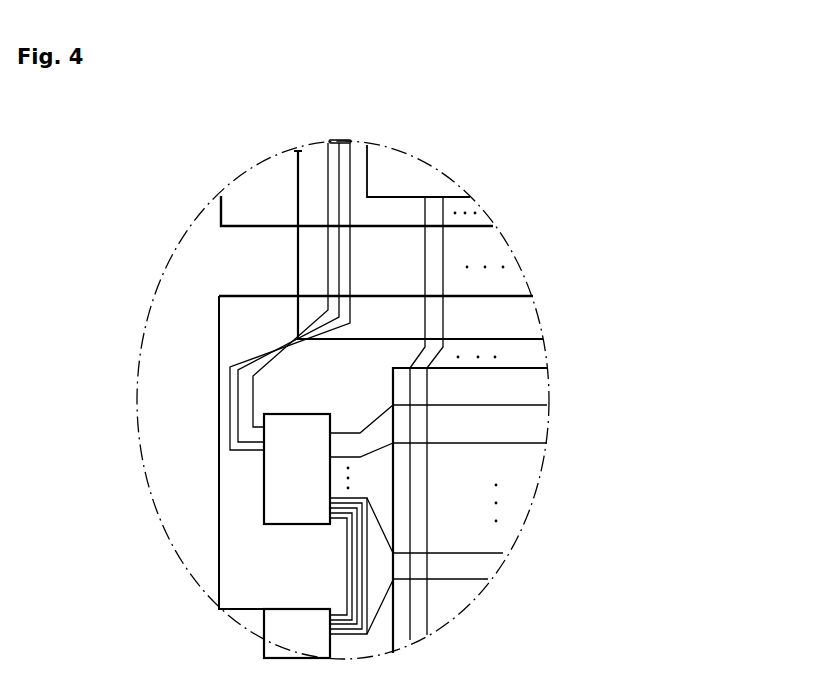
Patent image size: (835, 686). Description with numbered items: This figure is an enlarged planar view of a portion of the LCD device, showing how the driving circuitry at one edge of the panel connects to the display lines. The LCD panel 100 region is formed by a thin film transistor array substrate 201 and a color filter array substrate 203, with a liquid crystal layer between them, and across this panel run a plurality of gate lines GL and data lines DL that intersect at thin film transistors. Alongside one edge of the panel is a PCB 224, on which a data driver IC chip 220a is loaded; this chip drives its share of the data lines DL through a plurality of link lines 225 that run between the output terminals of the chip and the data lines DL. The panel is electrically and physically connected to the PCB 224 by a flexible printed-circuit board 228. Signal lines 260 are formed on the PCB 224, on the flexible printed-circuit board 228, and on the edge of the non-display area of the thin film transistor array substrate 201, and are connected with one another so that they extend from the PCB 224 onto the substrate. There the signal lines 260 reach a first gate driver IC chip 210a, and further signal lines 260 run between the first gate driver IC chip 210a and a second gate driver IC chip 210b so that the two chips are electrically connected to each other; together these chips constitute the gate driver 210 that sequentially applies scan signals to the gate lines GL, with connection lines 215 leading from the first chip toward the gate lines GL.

The PCB 224 is at (230, 217).
The flexible printed-circuit board 228 is at (297, 183).
The signal lines 260 is at (340, 139).
The data driver IC chip 220a is at (397, 173).
The link lines 225 is at (443, 252).
The thin film transistor array substrate 201 is at (523, 318).
The data lines DL is at (427, 540).
The gate lines GL is at (518, 442).
The color filter array substrate 203 is at (519, 490).
The display panel 100 is at (632, 378).
The connection lines 215 is at (347, 432).
The first gate driver IC chip 210a is at (264, 512).
The second gate driver IC chip 210b is at (264, 621).
The gate driver 210 is at (85, 527).